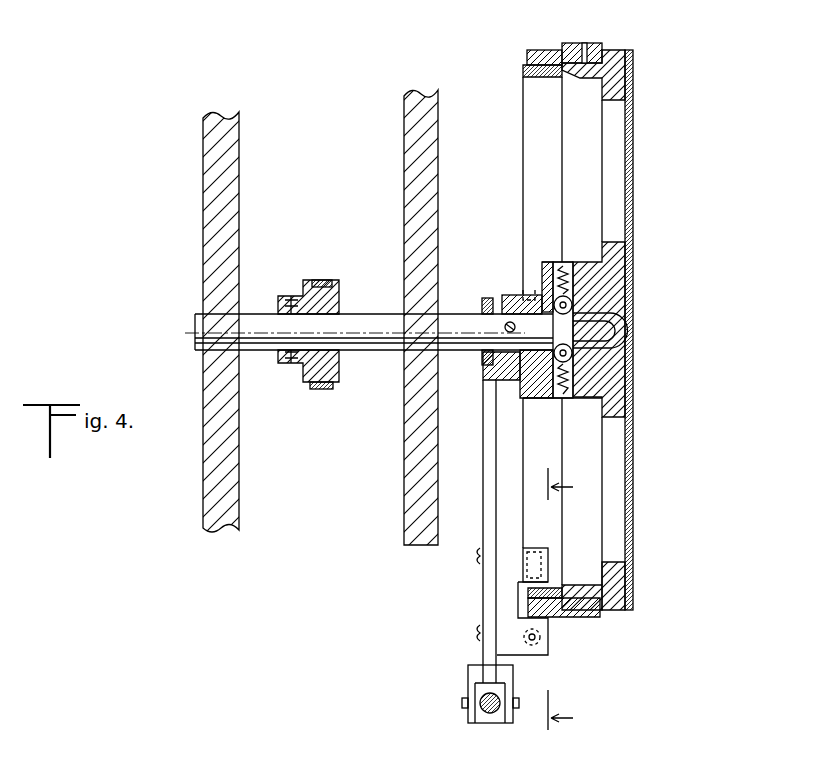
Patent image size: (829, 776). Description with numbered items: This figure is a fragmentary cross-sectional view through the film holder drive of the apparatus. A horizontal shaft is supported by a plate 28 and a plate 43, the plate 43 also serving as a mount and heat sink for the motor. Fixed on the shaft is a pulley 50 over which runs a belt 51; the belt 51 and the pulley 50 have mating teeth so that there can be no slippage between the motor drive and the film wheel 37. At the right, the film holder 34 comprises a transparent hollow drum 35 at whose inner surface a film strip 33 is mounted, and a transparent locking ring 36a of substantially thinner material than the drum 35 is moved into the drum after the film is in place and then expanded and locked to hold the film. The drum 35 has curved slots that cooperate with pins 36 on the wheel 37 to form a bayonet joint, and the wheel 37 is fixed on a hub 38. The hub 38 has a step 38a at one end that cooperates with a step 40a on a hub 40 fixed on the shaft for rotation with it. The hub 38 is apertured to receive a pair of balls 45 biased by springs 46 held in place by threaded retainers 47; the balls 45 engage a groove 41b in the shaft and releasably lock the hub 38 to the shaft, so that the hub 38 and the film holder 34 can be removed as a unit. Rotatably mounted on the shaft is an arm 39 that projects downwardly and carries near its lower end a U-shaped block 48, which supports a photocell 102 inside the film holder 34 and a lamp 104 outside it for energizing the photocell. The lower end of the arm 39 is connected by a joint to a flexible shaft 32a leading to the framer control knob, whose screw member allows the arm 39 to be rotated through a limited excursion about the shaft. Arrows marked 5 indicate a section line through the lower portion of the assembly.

The plate 28 is at (206, 503).
The plate 43 is at (405, 524).
The pulley 50 is at (340, 362).
The belt 51 is at (322, 278).
The film holder 34 is at (586, 308).
The wheel 37 is at (617, 172).
The transparent hollow drum 35 is at (603, 50).
The film strip 33 is at (543, 50).
The pins 36 is at (588, 44).
The transparent locking ring 36a is at (537, 116).
The hub 38 is at (612, 264).
The step 38a is at (533, 292).
The balls 45 is at (575, 300).
The springs 46 is at (573, 284).
The threaded retainers 47 is at (573, 392).
The groove 41b is at (605, 332).
The hub 40 is at (517, 366).
The step 40a is at (530, 364).
The arm 39 is at (486, 530).
The U-shaped block 48 is at (508, 610).
The photocell 102 is at (550, 552).
The lamp 104 is at (541, 637).
The flexible shaft 32a is at (494, 716).
The section line 5- 5 is at (571, 600).